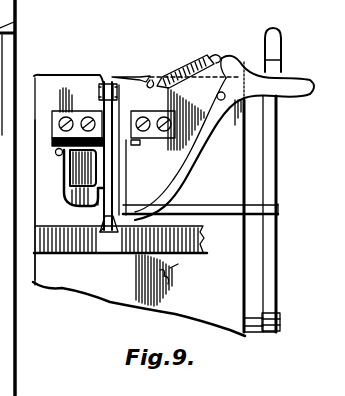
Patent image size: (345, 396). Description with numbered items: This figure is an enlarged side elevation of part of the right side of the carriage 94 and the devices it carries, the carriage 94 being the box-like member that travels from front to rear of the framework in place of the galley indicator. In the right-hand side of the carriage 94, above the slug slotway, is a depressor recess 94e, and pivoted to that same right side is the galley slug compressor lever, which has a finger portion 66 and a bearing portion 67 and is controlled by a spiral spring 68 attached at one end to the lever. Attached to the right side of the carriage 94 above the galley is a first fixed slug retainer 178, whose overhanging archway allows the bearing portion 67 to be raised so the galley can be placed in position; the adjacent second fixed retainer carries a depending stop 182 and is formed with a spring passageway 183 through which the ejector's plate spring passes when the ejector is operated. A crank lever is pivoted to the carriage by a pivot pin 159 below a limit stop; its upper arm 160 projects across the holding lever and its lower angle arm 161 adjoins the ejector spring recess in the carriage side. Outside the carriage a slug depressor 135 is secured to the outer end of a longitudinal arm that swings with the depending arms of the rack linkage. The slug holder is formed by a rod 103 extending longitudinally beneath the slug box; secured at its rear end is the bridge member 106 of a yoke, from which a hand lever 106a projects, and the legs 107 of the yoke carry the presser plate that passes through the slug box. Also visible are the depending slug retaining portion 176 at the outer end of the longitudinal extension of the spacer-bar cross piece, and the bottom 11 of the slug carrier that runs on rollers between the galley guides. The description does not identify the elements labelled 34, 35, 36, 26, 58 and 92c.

The wall 34 is at (15, 22).
The wall panel 35 is at (15, 66).
The base plate 36 is at (113, 236).
The supporting plate 26 is at (88, 236).
The depending stop 182 is at (104, 232).
The depressor recess 94e is at (108, 82).
The slug depressor 135 is at (150, 74).
The spiral spring 68 is at (188, 62).
The finger portion 66 is at (289, 90).
The carriage 94 is at (215, 158).
The upper arm 160 is at (52, 132).
The terminal 58 is at (80, 114).
The pivot pin 159 is at (56, 153).
The depending slug retaining portion 176 is at (113, 158).
The first fixed slug retainer 178 is at (113, 186).
The contact block 92c is at (85, 168).
The lower angle arm 161 is at (66, 200).
The spring passageway 183 is at (95, 162).
The legs 107 is at (238, 214).
The bottom 11 is at (206, 254).
The bearing portion 67 is at (180, 262).
The hand lever 106a is at (274, 42).
The bridge member 106 is at (279, 207).
The rod 103 is at (250, 326).